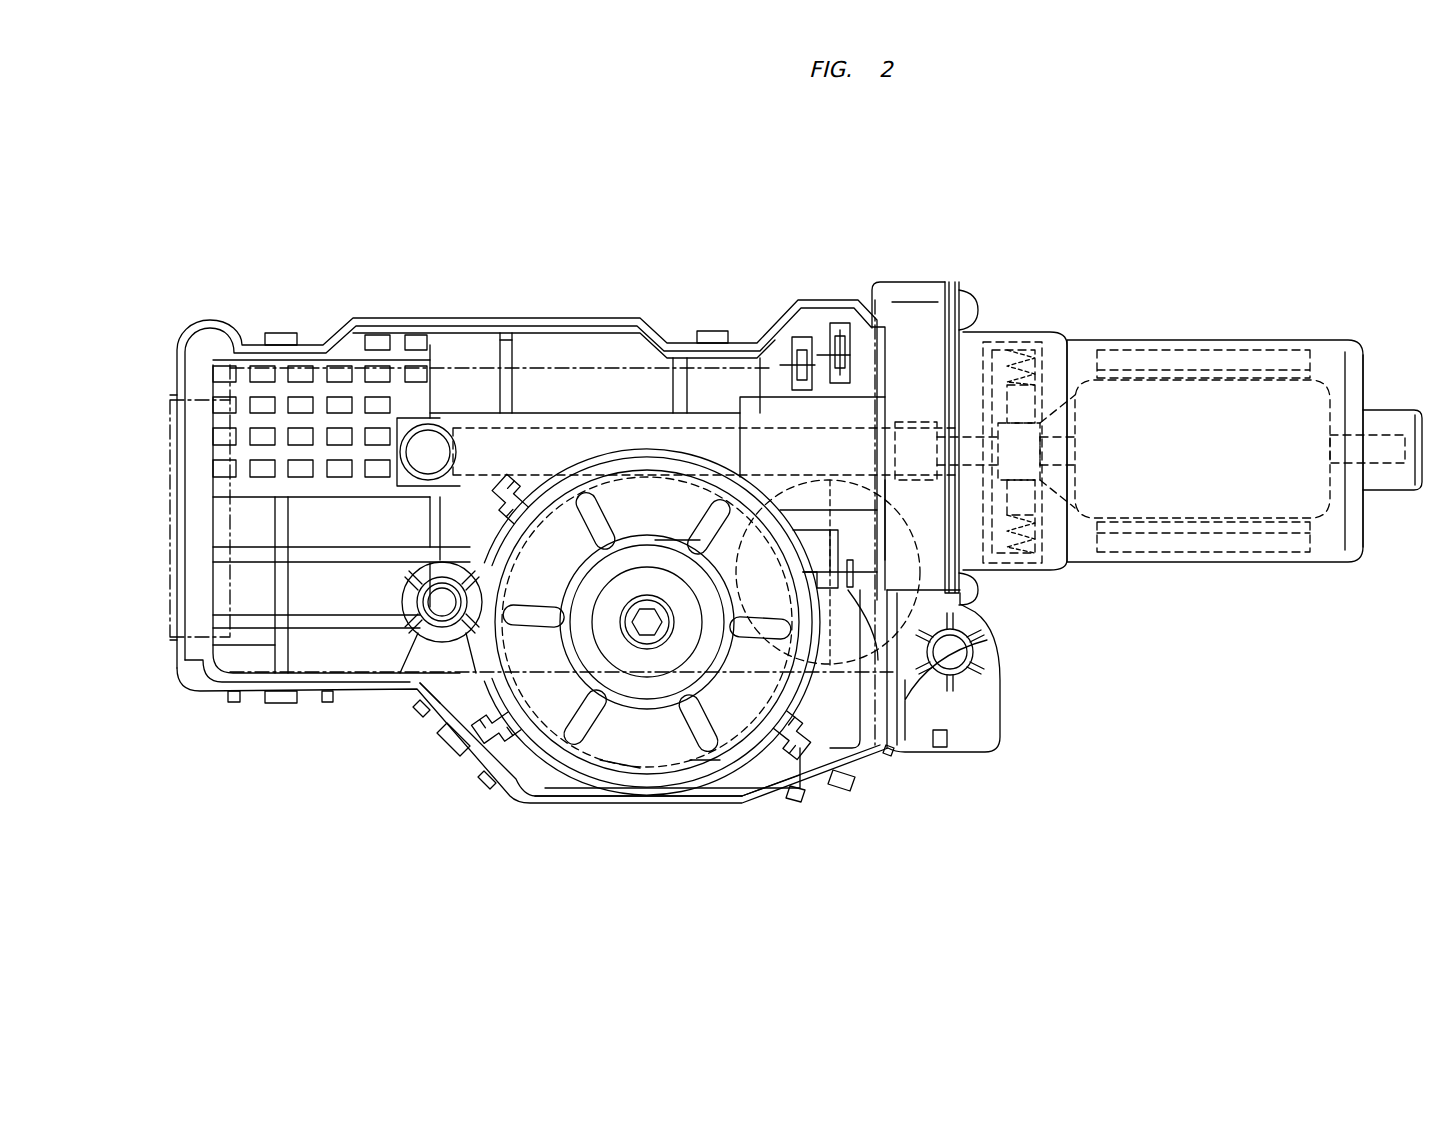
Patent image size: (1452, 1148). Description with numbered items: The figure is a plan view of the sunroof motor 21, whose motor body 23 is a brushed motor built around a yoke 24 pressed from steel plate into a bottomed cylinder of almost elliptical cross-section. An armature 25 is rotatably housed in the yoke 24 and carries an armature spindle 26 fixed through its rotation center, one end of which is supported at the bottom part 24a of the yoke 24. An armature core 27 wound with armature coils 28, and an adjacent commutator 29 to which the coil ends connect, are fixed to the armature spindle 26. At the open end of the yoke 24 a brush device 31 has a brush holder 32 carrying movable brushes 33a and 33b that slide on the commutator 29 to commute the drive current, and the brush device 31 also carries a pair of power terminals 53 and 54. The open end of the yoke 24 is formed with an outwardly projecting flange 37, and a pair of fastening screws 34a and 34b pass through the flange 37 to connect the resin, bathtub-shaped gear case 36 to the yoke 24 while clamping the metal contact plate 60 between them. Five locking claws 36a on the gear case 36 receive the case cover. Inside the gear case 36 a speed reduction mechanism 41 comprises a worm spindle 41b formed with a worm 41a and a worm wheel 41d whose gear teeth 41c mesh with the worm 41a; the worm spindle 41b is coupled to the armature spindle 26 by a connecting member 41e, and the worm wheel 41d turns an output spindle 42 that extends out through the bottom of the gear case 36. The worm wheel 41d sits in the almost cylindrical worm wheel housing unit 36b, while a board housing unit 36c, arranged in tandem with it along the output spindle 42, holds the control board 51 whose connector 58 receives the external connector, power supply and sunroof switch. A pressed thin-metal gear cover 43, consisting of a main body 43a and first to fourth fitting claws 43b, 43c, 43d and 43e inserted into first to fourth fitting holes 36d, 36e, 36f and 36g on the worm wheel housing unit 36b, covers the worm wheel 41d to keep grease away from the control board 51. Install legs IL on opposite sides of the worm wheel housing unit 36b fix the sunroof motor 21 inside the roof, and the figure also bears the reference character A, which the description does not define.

The sunroof motor 21 is at (1163, 680).
The motor body 23 is at (1251, 463).
The yoke 24 is at (1330, 548).
The bottom part of the yoke 24a is at (1418, 465).
The armature 25 is at (1335, 420).
The armature spindle 26 is at (1382, 450).
The armature core 27 is at (1205, 535).
The armature coils 28 is at (1025, 455).
The commutator 29 is at (1045, 470).
The brush device 31 is at (1015, 330).
The brush holder 32 is at (918, 440).
The brush 33a is at (1022, 510).
The brush 33b is at (1022, 400).
The fastening screw 34a is at (985, 600).
The fastening screw 34b is at (953, 380).
The gear case 36 is at (418, 315).
The locking claws 36a is at (282, 333).
The worm wheel housing unit 36b is at (582, 790).
The board housing unit 36c is at (352, 655).
The first fitting hole 36d is at (700, 530).
The second fitting hole 36e is at (790, 735).
The third fitting hole 36f is at (477, 697).
The fourth fitting hole 36g is at (490, 550).
The flange 37 is at (968, 310).
The speed reduction mechanism 41 is at (478, 450).
The worm 41a is at (612, 435).
The worm spindle 41b is at (505, 345).
The gear teeth 41c is at (610, 750).
The worm wheel 41d is at (700, 745).
The connecting member 41e is at (893, 437).
The output spindle 42 is at (647, 622).
The gear cover 43 is at (692, 672).
The main body 43a is at (565, 582).
The first fitting claw 43b is at (833, 560).
The second fitting claw 43c is at (790, 752).
The third fitting claw 43d is at (495, 740).
The fourth fitting claw 43e is at (505, 500).
The control board 51 is at (538, 418).
The power terminal 53 is at (800, 350).
The power terminal 54 is at (840, 345).
The connector 58 is at (168, 445).
The contact plate 60 is at (937, 325).
The axis A is at (890, 710).
The install legs IL is at (442, 602).